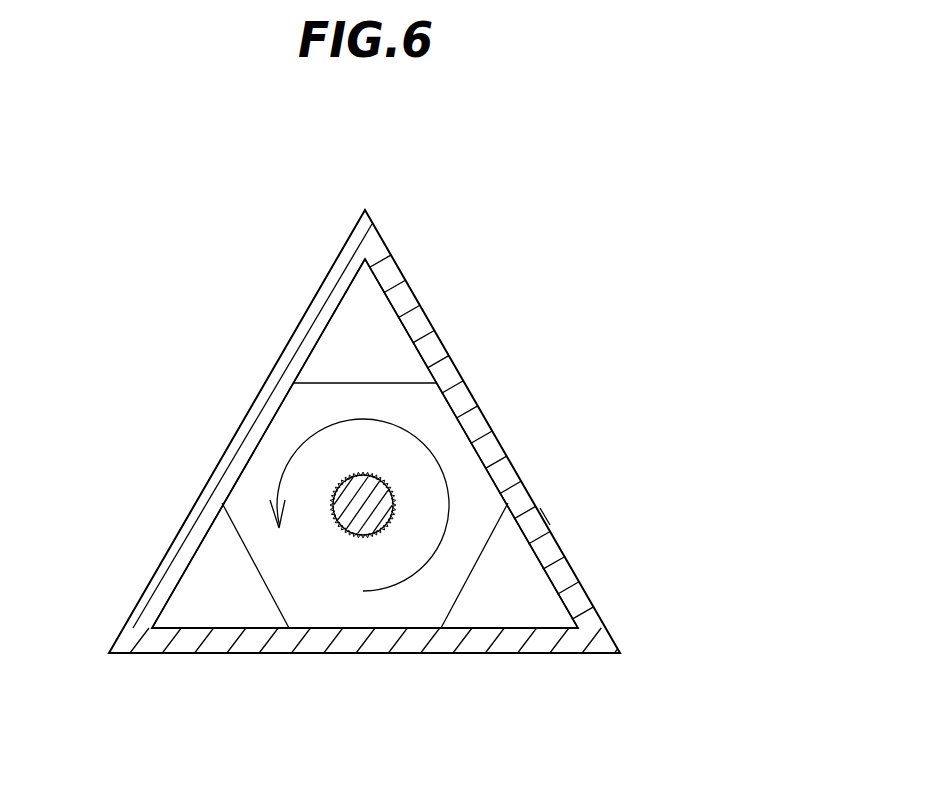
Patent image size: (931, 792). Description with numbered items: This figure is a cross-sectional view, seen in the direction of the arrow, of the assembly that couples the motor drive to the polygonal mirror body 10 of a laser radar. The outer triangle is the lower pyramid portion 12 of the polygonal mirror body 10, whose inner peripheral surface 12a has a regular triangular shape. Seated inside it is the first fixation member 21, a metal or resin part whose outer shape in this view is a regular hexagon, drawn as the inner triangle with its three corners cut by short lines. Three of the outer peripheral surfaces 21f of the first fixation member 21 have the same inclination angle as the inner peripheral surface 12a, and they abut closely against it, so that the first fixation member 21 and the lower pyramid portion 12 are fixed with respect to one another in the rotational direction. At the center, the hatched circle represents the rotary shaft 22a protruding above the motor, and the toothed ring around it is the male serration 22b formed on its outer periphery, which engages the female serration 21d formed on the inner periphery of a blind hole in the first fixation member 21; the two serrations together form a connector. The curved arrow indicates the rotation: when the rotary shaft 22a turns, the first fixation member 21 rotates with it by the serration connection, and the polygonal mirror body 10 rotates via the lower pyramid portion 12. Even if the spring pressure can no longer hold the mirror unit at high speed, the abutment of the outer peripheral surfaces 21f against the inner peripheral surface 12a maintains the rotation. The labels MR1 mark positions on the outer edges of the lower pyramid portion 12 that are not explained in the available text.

The polygonal mirror body 10 is at (366, 207).
The lower pyramid portion 12 is at (578, 600).
The inner peripheral surface 12a is at (405, 333).
The first fixation member 21 is at (433, 427).
The outer peripheral surface 21f is at (483, 460).
The female serration 21d is at (345, 531).
The rotary shaft 22a is at (358, 514).
The male serration 22b is at (334, 529).
The mark region MR1 is at (184, 521).